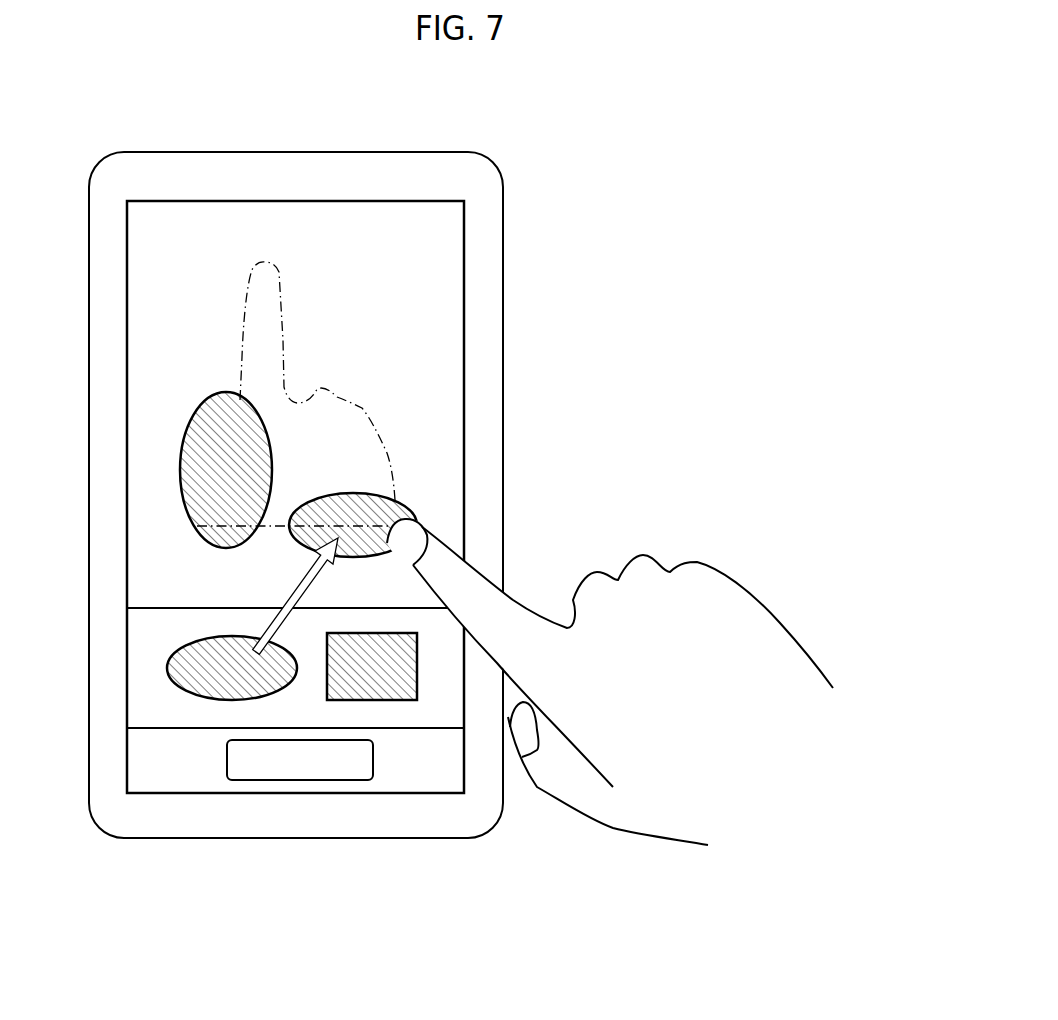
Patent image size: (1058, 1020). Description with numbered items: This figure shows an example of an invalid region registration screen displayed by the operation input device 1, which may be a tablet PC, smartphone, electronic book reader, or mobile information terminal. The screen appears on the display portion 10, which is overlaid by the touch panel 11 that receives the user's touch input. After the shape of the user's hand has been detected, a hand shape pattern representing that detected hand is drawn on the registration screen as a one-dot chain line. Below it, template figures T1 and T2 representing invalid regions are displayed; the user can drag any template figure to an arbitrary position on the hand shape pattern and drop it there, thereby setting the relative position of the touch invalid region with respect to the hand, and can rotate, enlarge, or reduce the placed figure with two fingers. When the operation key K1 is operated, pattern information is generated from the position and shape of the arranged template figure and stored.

The operation input device 1 is at (264, 126).
The display portion 10 is at (295, 449).
The touch panel 11 is at (363, 198).
The template figure T1 is at (168, 660).
The template figure T2 is at (388, 700).
The operation key K1 is at (307, 780).